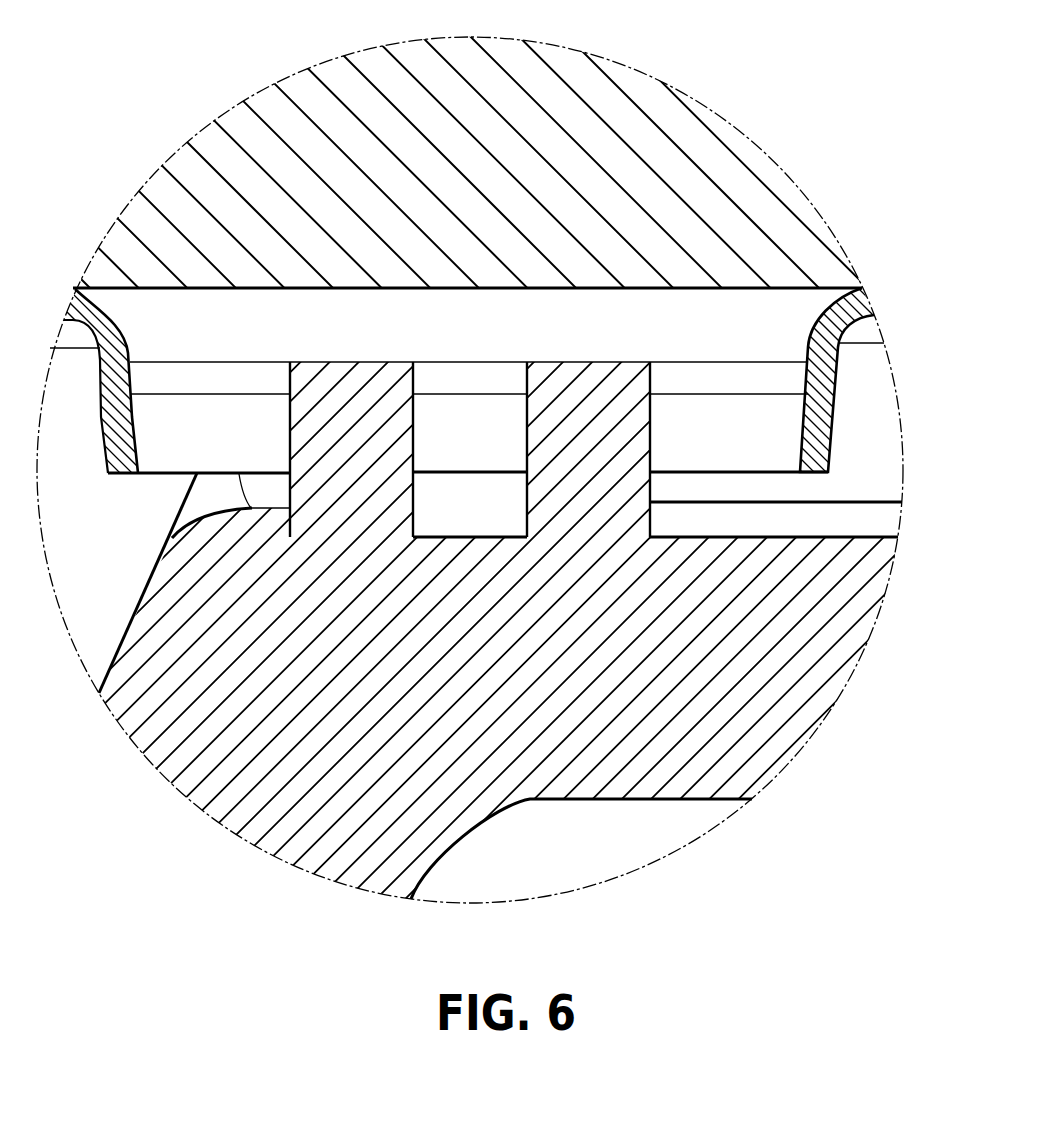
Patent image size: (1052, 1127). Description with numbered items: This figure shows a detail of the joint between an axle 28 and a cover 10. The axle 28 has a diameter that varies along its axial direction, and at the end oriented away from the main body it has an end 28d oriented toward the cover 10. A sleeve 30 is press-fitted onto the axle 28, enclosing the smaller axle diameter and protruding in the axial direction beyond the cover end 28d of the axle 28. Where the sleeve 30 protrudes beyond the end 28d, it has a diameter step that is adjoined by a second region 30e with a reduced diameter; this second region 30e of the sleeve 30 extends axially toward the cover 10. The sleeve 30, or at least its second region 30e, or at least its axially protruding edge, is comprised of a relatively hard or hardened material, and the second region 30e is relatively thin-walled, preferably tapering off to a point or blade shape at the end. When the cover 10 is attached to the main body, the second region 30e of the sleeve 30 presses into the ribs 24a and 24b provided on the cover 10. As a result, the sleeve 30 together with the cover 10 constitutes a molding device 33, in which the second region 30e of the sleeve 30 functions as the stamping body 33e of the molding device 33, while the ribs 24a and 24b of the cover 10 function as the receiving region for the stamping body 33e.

The cover 10 is at (750, 768).
The rib 24a is at (338, 370).
The rib 24b is at (573, 370).
The axle 28 is at (647, 93).
The end oriented toward the cover 28d is at (730, 265).
The sleeve 30 is at (68, 318).
The second region 30e is at (113, 388).
The molding device 33 is at (177, 487).
The stamping body 33e is at (115, 442).